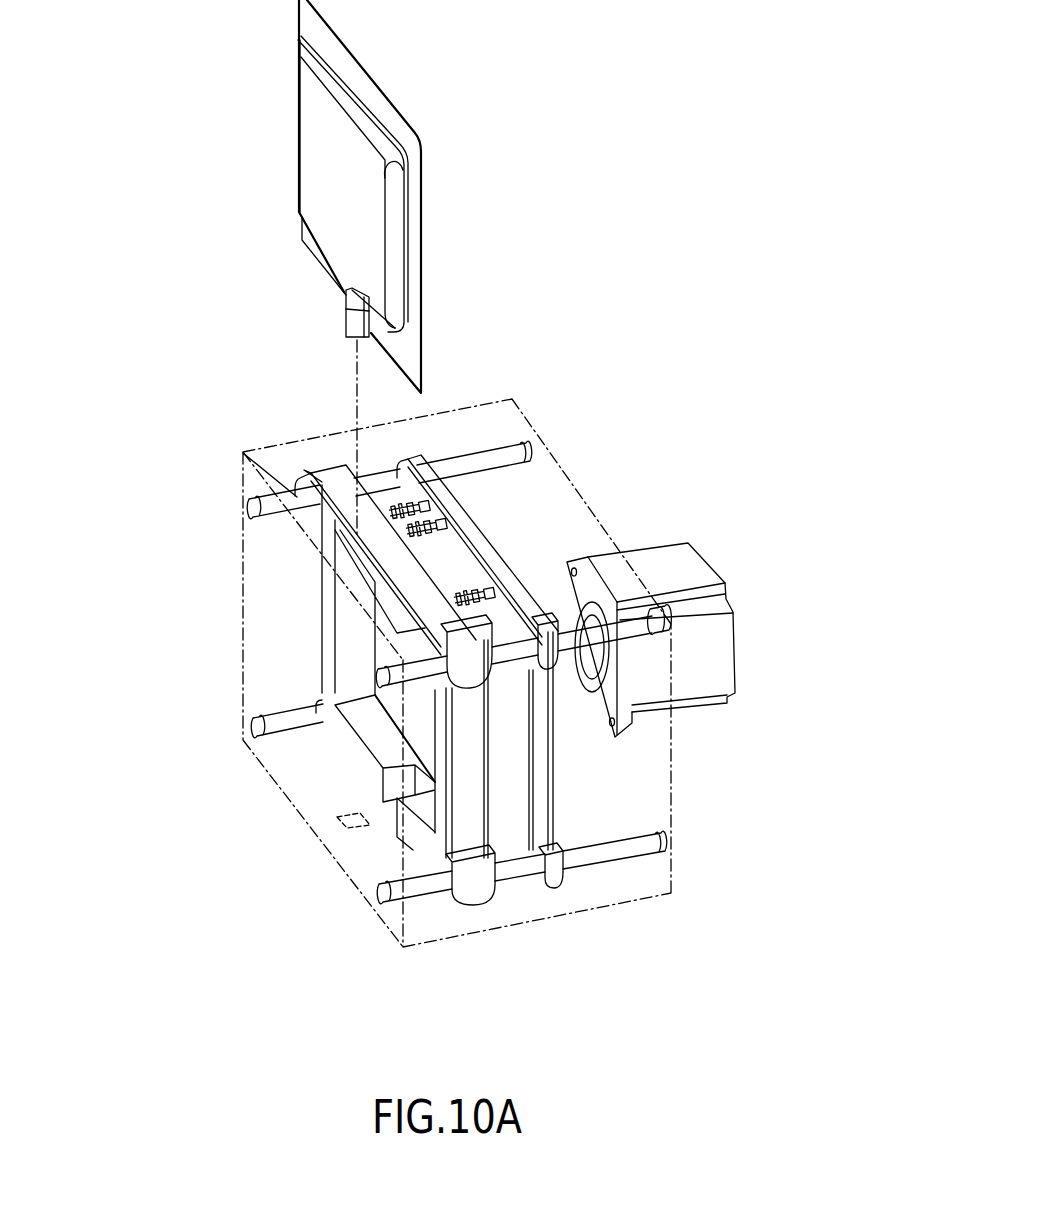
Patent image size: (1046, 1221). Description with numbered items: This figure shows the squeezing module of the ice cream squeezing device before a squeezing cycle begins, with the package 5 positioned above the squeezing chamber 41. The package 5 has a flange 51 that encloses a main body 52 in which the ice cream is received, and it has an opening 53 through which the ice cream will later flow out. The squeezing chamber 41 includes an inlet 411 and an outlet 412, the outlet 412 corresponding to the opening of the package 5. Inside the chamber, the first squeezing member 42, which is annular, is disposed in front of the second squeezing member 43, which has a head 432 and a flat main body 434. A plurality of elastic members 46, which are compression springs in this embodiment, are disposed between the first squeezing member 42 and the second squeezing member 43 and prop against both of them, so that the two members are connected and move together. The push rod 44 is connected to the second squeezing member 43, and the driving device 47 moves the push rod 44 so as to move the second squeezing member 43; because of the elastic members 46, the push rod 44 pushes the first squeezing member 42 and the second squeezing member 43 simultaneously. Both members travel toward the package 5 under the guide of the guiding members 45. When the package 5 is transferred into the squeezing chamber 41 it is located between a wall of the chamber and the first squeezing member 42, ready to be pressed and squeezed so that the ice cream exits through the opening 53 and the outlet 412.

The package 5 is at (232, 133).
The flange 51 is at (363, 83).
The main body 52 is at (347, 185).
The opening 53 is at (346, 323).
The squeezing chamber 41 is at (266, 450).
The inlet 411 is at (293, 485).
The outlet 412 is at (340, 818).
The first squeezing member 42 is at (468, 836).
The second squeezing member 43 is at (688, 1045).
The head 432 is at (508, 773).
The main body 434 is at (547, 770).
The push rod 44 is at (568, 662).
The guiding member 45 is at (512, 456).
The elastic member 46 is at (462, 519).
The driving device 47 is at (712, 655).